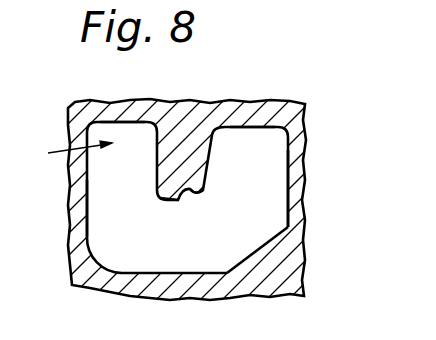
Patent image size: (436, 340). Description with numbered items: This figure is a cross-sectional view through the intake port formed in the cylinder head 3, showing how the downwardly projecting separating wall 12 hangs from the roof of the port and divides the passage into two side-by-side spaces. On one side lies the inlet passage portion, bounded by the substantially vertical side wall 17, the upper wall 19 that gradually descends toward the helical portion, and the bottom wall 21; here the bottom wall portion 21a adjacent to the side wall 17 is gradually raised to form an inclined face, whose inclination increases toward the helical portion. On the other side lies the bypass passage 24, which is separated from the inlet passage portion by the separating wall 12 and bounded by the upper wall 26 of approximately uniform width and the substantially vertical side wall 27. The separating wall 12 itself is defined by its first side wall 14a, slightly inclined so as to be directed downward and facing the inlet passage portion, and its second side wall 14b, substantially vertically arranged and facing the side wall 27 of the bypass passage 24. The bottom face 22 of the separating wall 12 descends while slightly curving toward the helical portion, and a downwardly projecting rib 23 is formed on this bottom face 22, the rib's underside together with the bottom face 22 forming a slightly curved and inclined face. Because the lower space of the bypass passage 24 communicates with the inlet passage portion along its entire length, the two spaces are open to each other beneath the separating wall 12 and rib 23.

The cylinder head 3 is at (292, 131).
The separating wall 12 is at (210, 178).
The first side wall 14a is at (212, 152).
The second side wall 14b is at (158, 167).
The side wall 17 is at (282, 174).
The upper wall 19 is at (262, 124).
The bottom wall 21 is at (122, 273).
The bottom wall portion 21a is at (297, 272).
The bottom face 22 is at (196, 200).
The rib 23 is at (175, 201).
The bypass passage 24 is at (66, 154).
The upper wall 26 is at (106, 120).
The side wall 27 is at (95, 205).